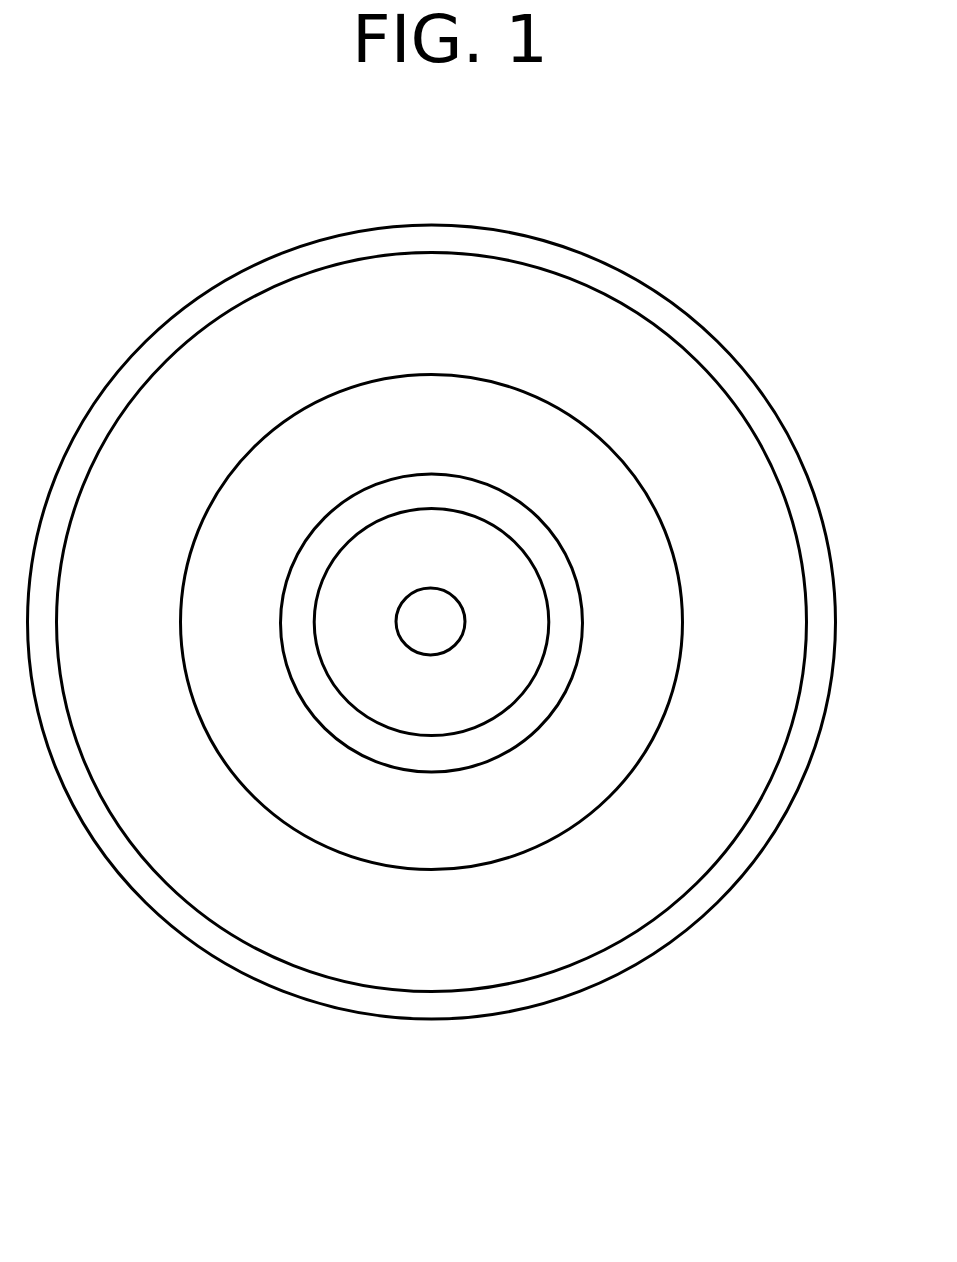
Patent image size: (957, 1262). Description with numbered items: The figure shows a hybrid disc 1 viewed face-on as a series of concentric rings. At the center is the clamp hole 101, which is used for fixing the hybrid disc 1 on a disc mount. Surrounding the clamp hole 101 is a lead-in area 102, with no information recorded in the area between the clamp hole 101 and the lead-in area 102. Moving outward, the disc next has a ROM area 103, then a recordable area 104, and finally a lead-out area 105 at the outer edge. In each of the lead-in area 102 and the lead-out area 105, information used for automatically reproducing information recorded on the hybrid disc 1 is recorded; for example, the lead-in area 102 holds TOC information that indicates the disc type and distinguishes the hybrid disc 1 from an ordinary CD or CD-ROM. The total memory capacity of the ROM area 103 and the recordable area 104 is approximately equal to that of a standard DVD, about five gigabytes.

The hybrid disc 1 is at (748, 298).
The clamp hole 101 is at (455, 611).
The lead-in area 102 is at (552, 765).
The ROM area 103 is at (498, 861).
The recordable area 104 is at (437, 992).
The lead-out area 105 is at (383, 947).